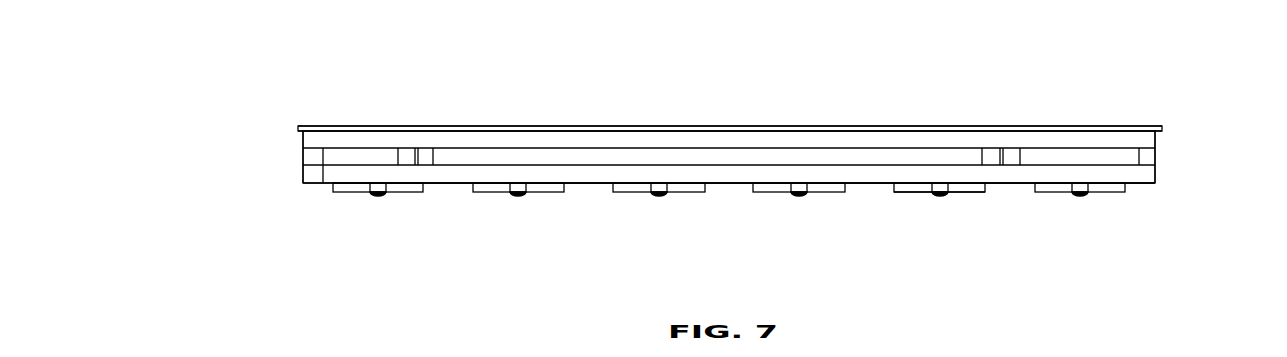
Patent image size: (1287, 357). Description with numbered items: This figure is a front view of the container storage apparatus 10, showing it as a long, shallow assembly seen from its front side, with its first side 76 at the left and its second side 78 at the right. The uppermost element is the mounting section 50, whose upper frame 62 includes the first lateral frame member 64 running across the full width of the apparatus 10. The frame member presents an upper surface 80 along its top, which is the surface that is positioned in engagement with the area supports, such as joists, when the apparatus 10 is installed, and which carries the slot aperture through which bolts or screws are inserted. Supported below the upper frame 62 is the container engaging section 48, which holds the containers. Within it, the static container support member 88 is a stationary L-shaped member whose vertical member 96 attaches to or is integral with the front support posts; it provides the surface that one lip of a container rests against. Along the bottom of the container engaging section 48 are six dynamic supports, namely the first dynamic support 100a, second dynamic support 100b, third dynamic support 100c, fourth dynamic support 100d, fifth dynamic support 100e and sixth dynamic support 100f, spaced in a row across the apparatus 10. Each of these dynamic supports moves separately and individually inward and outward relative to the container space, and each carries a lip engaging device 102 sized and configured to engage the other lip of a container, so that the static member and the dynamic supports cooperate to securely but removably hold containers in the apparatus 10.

The apparatus 10 is at (1192, 102).
The container engaging section 48 is at (583, 213).
The mounting section 50 is at (1006, 120).
The upper frame 62 is at (536, 122).
The first lateral frame member 64 is at (449, 137).
The first side 76 is at (286, 168).
The second side 78 is at (1178, 169).
The upper surface 80 is at (709, 124).
The static container support member 88 is at (614, 171).
The vertical member 96 is at (725, 172).
The first dynamic support 100a is at (372, 206).
The second dynamic support 100b is at (517, 206).
The third dynamic support 100c is at (657, 206).
The fourth dynamic support 100d is at (824, 206).
The fifth dynamic support 100e is at (959, 206).
The sixth dynamic support 100f is at (1088, 198).
The lip engaging device 102 is at (918, 192).